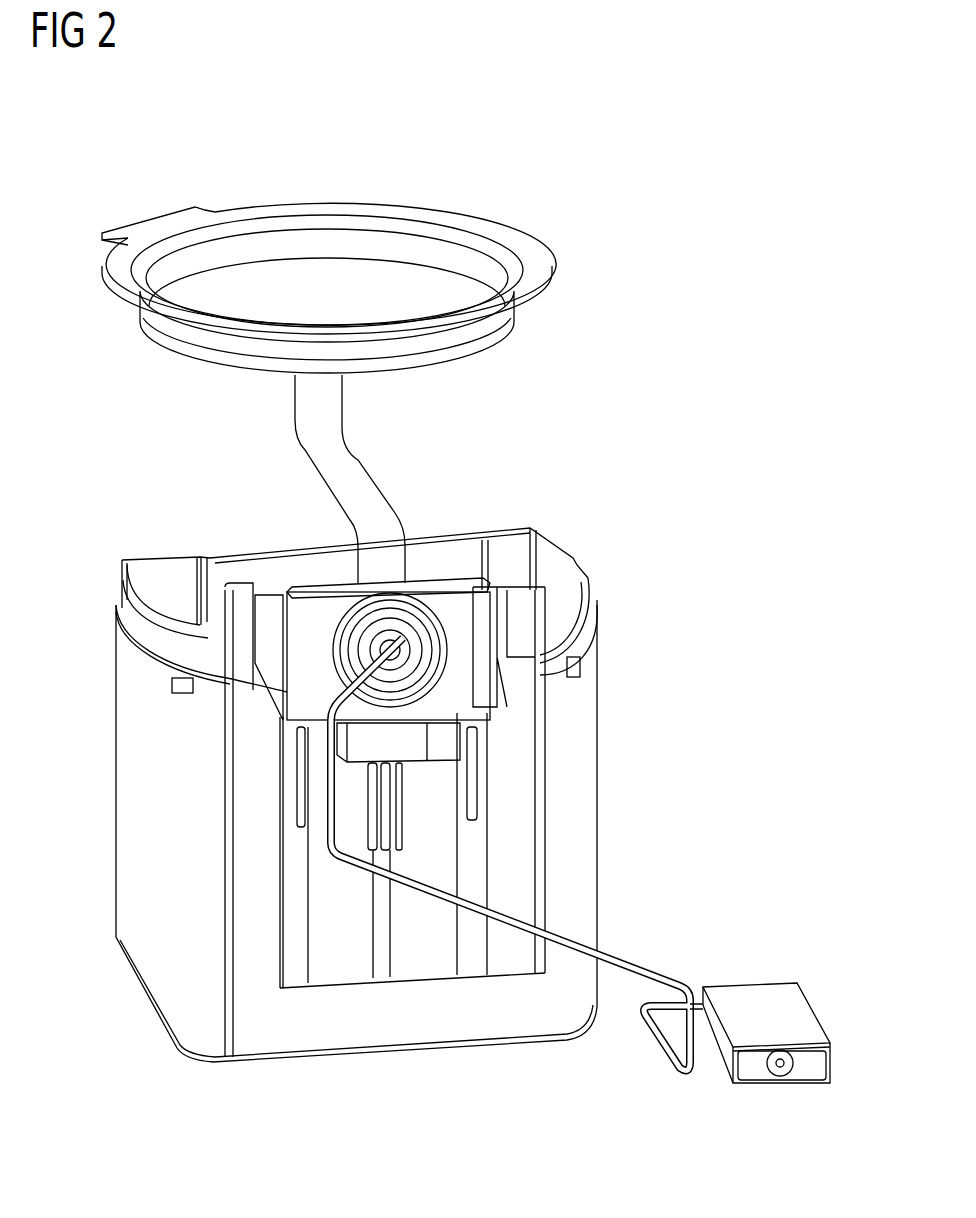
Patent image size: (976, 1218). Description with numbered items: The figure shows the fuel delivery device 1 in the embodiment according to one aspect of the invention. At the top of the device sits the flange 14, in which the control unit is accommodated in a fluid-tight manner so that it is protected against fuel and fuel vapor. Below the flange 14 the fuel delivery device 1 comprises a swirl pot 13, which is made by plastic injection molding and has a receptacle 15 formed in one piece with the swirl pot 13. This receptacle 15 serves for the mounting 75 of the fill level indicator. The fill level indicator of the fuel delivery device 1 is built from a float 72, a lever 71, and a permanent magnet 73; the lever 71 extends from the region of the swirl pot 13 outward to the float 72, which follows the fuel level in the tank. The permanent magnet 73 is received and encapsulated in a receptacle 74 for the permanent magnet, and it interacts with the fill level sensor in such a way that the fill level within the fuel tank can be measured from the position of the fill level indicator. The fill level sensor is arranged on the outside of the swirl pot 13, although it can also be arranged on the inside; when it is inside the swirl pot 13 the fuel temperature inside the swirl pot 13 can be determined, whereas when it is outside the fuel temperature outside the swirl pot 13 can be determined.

The fuel delivery device 1 is at (652, 433).
The swirl pot 13 is at (158, 737).
The flange 14 is at (327, 205).
The receptacle 15 is at (303, 668).
The lever 71 is at (637, 963).
The float 72 is at (753, 983).
The permanent magnet 73 is at (303, 597).
The receptacle for the permanent magnet 74 is at (357, 650).
The mounting 75 is at (340, 603).